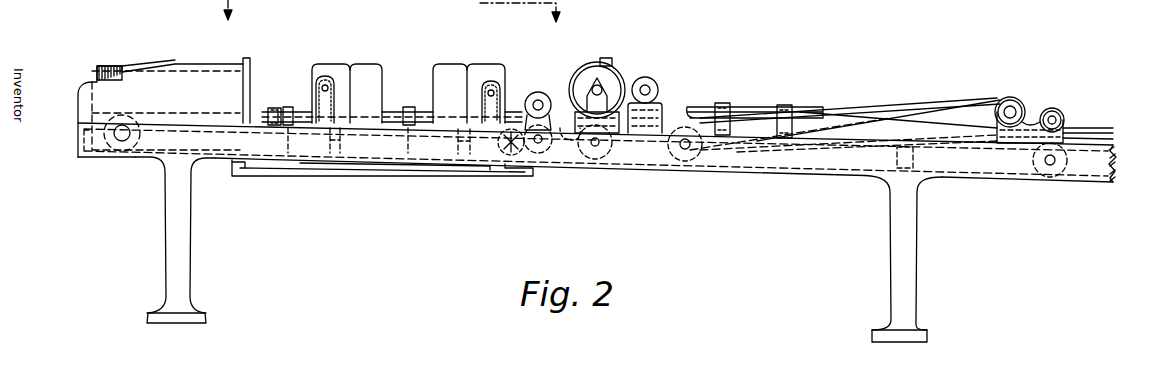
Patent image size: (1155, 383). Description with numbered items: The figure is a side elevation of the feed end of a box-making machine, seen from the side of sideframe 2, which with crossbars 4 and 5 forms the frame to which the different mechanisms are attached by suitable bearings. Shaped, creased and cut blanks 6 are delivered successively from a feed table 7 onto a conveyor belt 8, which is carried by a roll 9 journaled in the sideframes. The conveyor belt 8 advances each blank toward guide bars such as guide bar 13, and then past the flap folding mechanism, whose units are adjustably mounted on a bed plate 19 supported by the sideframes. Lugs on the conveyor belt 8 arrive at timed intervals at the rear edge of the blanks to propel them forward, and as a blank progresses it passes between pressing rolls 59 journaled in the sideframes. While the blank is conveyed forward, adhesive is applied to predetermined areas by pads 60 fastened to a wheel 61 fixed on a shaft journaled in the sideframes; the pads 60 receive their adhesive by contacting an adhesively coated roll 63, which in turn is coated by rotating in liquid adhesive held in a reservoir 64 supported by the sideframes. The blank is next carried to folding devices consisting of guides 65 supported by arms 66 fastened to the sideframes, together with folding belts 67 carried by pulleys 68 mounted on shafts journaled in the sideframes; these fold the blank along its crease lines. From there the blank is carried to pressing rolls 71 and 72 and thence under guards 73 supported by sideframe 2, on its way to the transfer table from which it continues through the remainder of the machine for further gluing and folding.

The sideframe 2 is at (196, 170).
The crossbar 4 is at (896, 170).
The crossbar 5 is at (389, 26).
The blank 6 is at (110, 68).
The feed table 7 is at (178, 63).
The conveyor belt 8 is at (170, 155).
The roll 9 is at (133, 133).
The guide bar 13 is at (560, 105).
The bed plate 19 is at (298, 172).
The pressing rolls 59 is at (551, 70).
The pad 60 is at (610, 60).
The wheel 61 is at (615, 96).
The adhesively coated roll 63 is at (650, 78).
The reservoir 64 is at (663, 108).
The guide 65 is at (738, 106).
The arm 66 is at (793, 106).
The folding belt 67 is at (915, 114).
The pulley 68 is at (1003, 100).
The pressing roll 71 is at (1062, 108).
The pressing roll 72 is at (1058, 168).
The guard 73 is at (1103, 118).